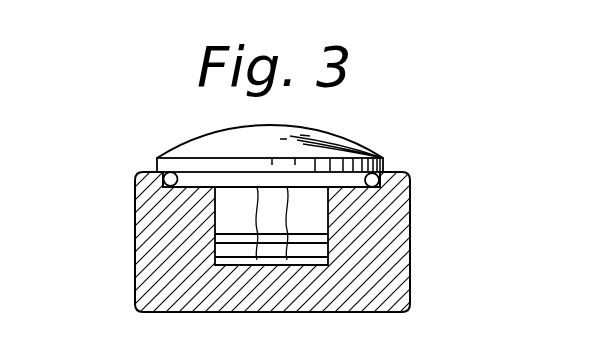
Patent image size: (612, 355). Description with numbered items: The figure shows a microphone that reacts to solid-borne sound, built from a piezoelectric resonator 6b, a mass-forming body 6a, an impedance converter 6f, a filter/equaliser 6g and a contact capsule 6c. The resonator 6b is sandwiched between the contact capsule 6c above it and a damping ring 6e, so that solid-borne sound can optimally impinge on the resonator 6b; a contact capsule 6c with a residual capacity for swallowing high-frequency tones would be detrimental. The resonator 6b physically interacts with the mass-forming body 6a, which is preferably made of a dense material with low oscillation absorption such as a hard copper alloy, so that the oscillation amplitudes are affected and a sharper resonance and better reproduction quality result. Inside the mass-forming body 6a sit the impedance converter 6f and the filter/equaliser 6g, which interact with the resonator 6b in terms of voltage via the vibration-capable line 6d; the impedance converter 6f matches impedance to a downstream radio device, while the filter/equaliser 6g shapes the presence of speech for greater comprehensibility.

The mass-forming body 6a is at (410, 242).
The piezoelectric resonator 6b is at (383, 161).
The contact capsule 6c is at (363, 143).
The line 6d is at (328, 210).
The damping ring 6e is at (163, 178).
The impedance converter 6f is at (215, 235).
The filter/equaliser 6g is at (215, 263).